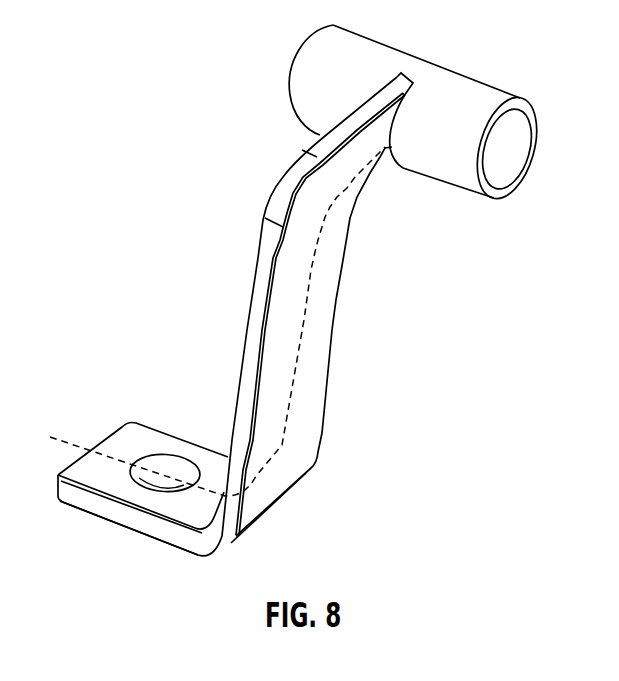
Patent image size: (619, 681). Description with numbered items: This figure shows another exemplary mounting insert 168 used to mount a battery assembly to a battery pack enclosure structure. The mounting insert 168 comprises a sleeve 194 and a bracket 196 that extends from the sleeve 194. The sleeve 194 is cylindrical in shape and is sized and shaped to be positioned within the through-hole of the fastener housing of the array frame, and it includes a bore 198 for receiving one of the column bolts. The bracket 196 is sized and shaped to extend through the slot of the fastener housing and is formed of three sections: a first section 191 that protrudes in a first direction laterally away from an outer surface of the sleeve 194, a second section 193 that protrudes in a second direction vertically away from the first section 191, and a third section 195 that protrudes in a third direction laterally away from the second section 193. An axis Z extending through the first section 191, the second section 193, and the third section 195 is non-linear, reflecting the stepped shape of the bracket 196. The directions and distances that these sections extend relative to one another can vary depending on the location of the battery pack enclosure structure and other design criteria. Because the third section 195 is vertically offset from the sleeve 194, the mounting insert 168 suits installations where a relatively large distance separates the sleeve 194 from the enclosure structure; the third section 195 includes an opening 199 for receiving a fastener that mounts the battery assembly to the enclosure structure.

The mounting insert 168 is at (254, 181).
The first section 191 is at (381, 124).
The second section 193 is at (336, 263).
The sleeve 194 is at (452, 97).
The third section 195 is at (102, 507).
The bracket 196 is at (306, 399).
The bore 198 is at (509, 146).
The opening 199 is at (171, 465).
The axis Z is at (306, 322).